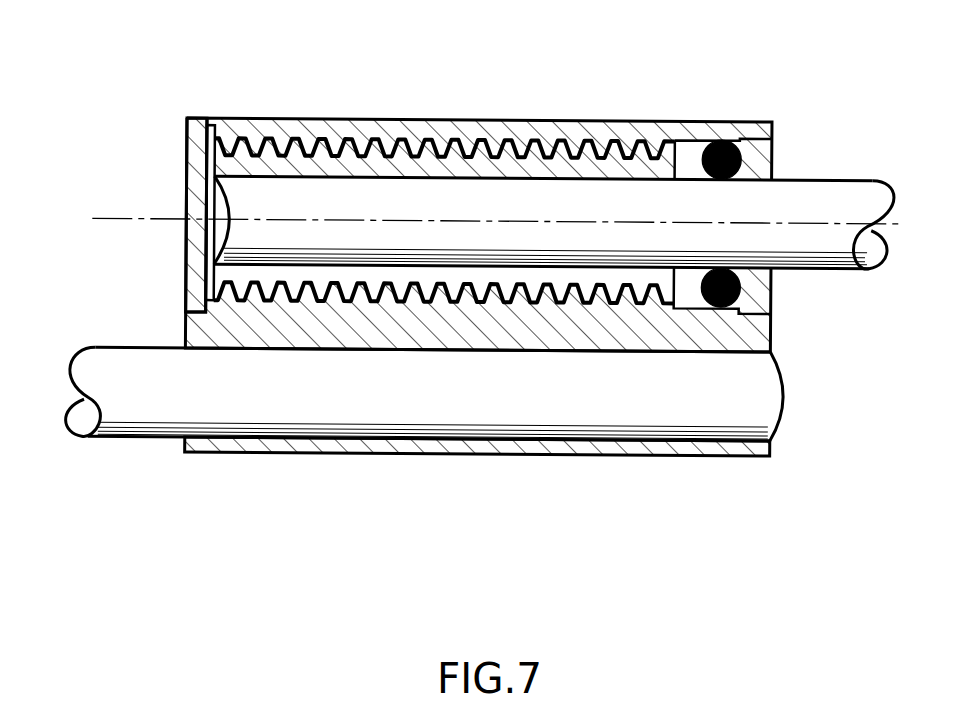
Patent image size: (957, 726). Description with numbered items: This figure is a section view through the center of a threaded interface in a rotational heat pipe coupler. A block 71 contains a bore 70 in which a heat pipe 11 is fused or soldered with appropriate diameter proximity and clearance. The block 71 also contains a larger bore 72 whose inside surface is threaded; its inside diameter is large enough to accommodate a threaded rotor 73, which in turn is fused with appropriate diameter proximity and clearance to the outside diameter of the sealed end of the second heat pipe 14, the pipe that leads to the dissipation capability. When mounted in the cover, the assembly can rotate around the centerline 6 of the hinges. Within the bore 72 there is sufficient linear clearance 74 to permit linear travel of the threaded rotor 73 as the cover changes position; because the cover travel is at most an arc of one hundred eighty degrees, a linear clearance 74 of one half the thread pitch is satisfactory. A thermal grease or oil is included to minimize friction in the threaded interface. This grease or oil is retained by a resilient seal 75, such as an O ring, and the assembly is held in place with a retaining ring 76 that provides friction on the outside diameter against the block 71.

The centerline 6 is at (117, 217).
The heat pipe 11 is at (788, 249).
The second heat pipe 14 is at (163, 415).
The bore 70 is at (178, 347).
The block 71 is at (418, 131).
The bore 72 is at (266, 148).
The threaded rotor 73 is at (237, 165).
The linear clearance 74 is at (220, 229).
The resilient seal 75 is at (730, 138).
The retaining ring 76 is at (760, 158).